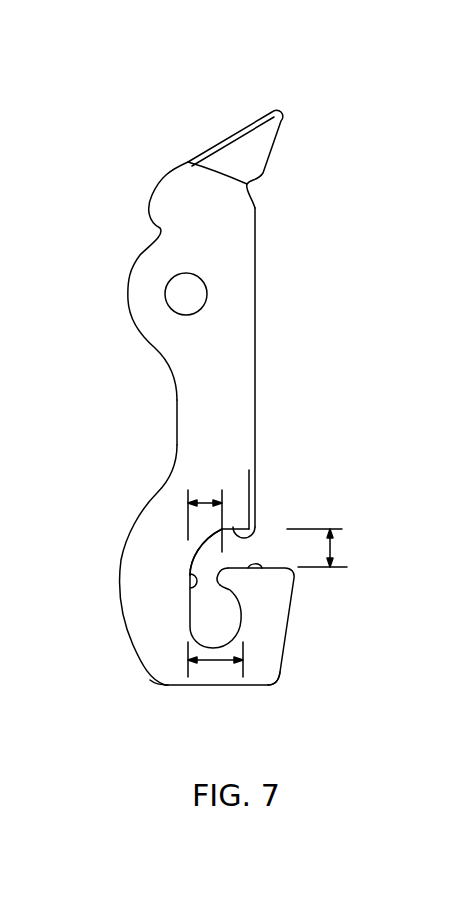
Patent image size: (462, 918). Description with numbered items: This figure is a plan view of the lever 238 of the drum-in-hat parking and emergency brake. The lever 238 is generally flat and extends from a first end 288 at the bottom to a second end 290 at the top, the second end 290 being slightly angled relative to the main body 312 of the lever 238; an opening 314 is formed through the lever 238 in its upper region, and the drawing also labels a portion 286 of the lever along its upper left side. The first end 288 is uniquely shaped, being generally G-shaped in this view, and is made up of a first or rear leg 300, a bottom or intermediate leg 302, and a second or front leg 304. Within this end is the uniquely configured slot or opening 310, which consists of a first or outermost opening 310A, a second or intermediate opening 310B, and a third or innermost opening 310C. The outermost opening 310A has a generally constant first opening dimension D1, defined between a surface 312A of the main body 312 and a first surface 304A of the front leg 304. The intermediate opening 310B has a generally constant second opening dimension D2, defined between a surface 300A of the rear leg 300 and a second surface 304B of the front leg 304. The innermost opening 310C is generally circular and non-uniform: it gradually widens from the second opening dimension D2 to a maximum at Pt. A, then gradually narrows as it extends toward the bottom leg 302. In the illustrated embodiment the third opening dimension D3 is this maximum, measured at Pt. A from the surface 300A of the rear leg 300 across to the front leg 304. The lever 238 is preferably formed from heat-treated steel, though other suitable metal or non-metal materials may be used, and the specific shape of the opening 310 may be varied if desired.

The lever 238 is at (300, 343).
The second end 290 is at (253, 115).
The upper body portion 286 is at (158, 232).
The opening 314 is at (194, 298).
The main body 312 is at (242, 398).
The surface of main body 312A is at (249, 470).
The first or outermost opening 310A is at (260, 540).
The slot or opening 310 is at (302, 540).
The second or intermediate opening 310B is at (192, 562).
The third or innermost opening 310C is at (205, 611).
The rear leg 300 is at (142, 613).
The surface of rear leg 300A is at (190, 576).
The front leg 304 is at (282, 625).
The first surface of front leg 304A is at (257, 564).
The second surface of front leg 304B is at (226, 587).
The bottom leg 302 is at (207, 684).
The first end 288 is at (165, 684).
The point A Pt. A is at (279, 678).
The first opening dimension D1 is at (333, 548).
The second opening dimension D2 is at (205, 502).
The third opening dimension D3 is at (216, 662).